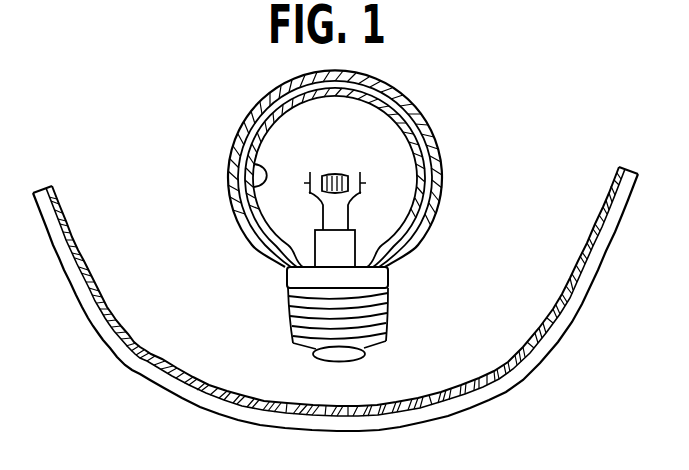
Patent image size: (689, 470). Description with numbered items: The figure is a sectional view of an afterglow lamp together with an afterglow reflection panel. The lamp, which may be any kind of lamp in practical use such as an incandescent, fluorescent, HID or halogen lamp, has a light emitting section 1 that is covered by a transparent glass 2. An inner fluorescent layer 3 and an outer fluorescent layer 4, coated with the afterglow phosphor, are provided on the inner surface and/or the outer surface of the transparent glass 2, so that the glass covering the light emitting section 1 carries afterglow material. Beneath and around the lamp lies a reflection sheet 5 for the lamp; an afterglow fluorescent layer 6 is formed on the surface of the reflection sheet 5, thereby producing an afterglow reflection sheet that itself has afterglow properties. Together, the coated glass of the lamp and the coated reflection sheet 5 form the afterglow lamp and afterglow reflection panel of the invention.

The light emitting section 1 is at (344, 163).
The transparent glass 2 is at (406, 107).
The inner fluorescent layer 3 is at (240, 199).
The outer fluorescent layer 4 is at (252, 113).
The reflection sheet 5 is at (69, 291).
The afterglow fluorescent layer 6 is at (78, 246).